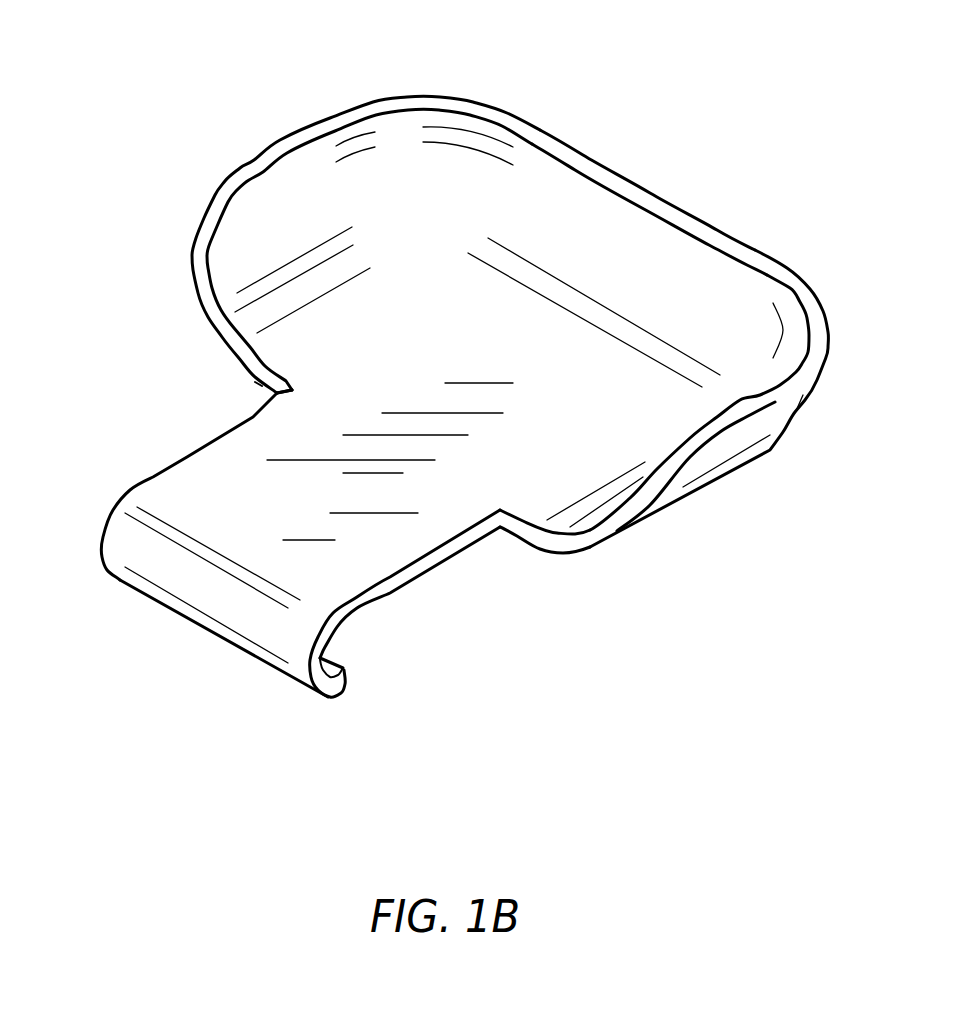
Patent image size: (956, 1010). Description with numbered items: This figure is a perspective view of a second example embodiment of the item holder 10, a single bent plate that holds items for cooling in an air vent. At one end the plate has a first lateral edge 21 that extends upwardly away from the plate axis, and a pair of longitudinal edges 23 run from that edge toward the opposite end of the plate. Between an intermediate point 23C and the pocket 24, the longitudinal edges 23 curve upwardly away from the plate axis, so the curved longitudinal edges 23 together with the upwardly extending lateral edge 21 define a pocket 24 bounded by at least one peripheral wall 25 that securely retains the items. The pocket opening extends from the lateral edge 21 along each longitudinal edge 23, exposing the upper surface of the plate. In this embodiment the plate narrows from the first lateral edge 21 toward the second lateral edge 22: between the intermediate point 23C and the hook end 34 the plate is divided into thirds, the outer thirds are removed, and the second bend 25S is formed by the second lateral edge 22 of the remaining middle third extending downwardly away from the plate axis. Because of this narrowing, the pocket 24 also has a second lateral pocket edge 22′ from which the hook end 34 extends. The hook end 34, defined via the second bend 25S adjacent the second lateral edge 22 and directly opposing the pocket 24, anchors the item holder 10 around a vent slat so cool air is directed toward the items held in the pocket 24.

The item holder 10 is at (252, 90).
The first lateral edge 21 is at (608, 178).
The longitudinal edges 23 is at (245, 178).
The pocket 24 is at (703, 300).
The peripheral wall 25 is at (290, 192).
The second lateral pocket edge 22′ is at (262, 380).
The intermediate point 23C is at (500, 528).
The second lateral edge 22 is at (343, 668).
The second bend 25S is at (127, 542).
The hook end 34 is at (210, 678).